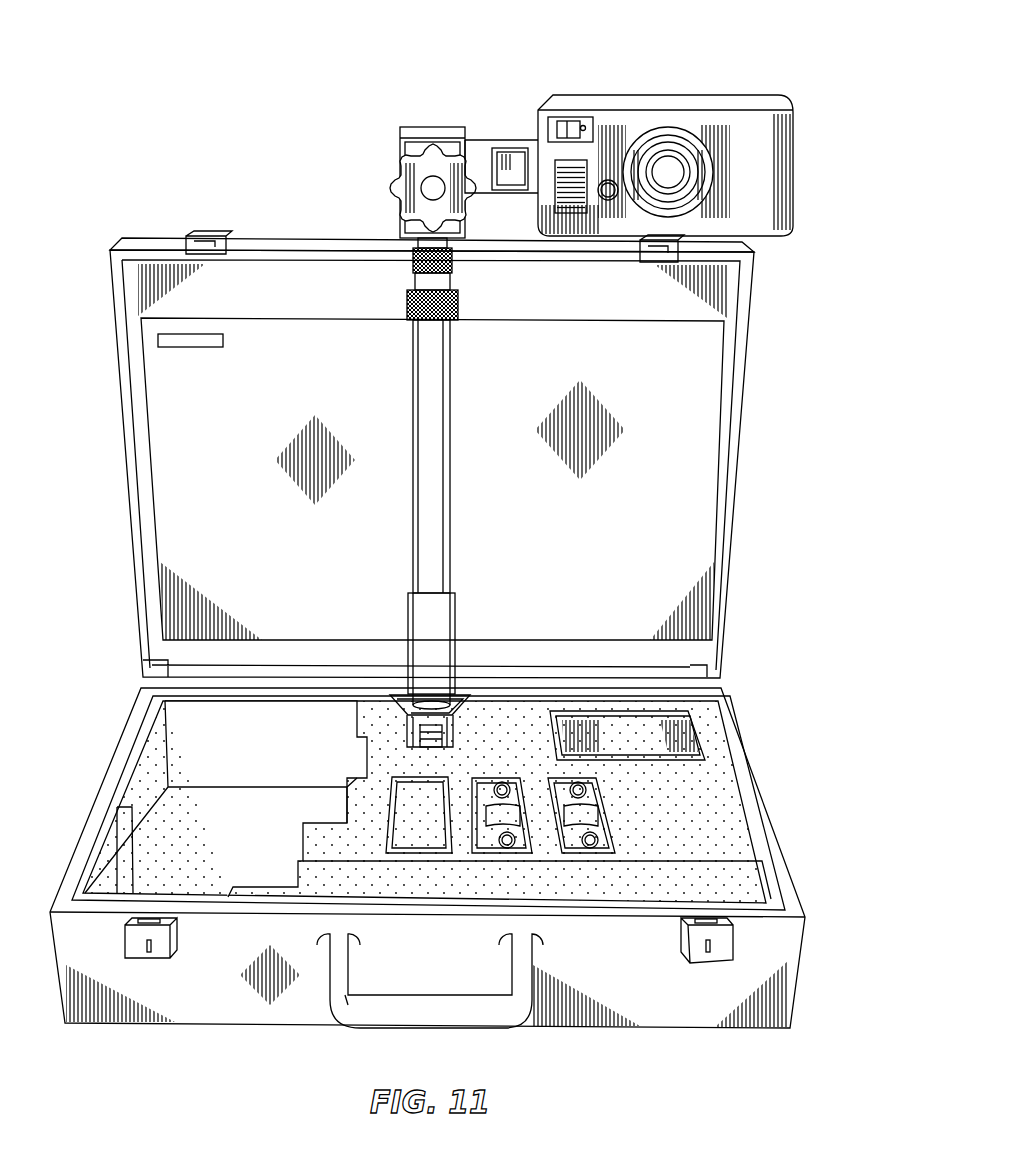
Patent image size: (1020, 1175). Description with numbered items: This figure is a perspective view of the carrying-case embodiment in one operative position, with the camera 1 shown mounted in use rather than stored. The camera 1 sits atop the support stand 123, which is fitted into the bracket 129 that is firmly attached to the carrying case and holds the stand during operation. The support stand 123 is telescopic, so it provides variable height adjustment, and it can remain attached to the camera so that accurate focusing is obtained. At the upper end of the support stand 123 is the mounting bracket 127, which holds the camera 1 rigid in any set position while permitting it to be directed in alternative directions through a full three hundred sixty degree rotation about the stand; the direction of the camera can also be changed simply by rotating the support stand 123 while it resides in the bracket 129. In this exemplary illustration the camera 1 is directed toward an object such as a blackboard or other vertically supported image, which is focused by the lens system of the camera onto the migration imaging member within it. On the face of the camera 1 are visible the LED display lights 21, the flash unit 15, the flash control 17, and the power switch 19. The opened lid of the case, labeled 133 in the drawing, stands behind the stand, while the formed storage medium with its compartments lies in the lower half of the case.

The camera device 1 is at (629, 153).
The flash unit 15 is at (553, 195).
The flash control 17 is at (608, 201).
The power switch 19 is at (557, 118).
The LED display lights 21 is at (585, 124).
The support stand 123 is at (442, 527).
The mounting bracket 127 is at (402, 130).
The bracket 129 is at (465, 693).
The case lid 133 is at (160, 583).